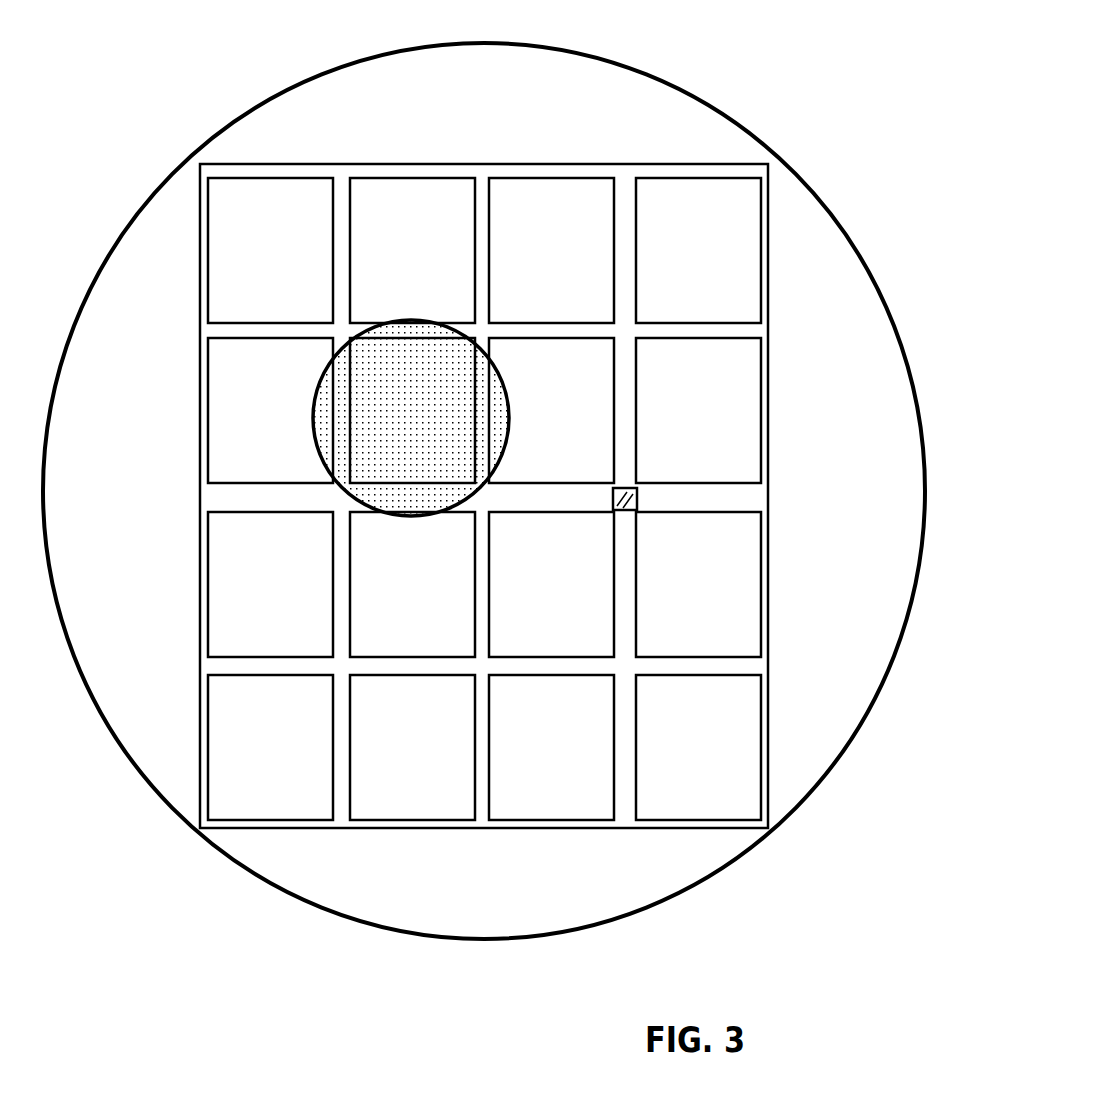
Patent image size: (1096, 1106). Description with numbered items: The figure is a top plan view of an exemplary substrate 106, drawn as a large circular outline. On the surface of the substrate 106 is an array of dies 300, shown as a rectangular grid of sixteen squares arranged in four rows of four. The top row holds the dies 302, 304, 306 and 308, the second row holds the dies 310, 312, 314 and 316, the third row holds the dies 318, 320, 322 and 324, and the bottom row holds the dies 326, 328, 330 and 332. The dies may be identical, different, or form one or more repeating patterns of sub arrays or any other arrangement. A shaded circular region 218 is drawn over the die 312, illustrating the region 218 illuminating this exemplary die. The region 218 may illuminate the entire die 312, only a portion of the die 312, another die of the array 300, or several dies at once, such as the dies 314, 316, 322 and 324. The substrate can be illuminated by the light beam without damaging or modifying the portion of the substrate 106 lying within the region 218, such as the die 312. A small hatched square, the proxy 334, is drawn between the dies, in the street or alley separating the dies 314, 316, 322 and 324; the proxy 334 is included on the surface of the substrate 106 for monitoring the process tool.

The substrate 106 is at (673, 108).
The array of dies 300 is at (493, 118).
The region 218 is at (318, 446).
The proxy 334 is at (640, 493).
The die 302 is at (249, 276).
The die 304 is at (391, 276).
The die 306 is at (530, 276).
The die 308 is at (677, 276).
The die 310 is at (249, 436).
The die 312 is at (391, 436).
The die 314 is at (530, 436).
The die 316 is at (677, 436).
The die 318 is at (249, 610).
The die 320 is at (391, 610).
The die 322 is at (530, 610).
The die 324 is at (677, 610).
The die 326 is at (249, 773).
The die 328 is at (391, 773).
The die 330 is at (530, 773).
The die 332 is at (677, 773).